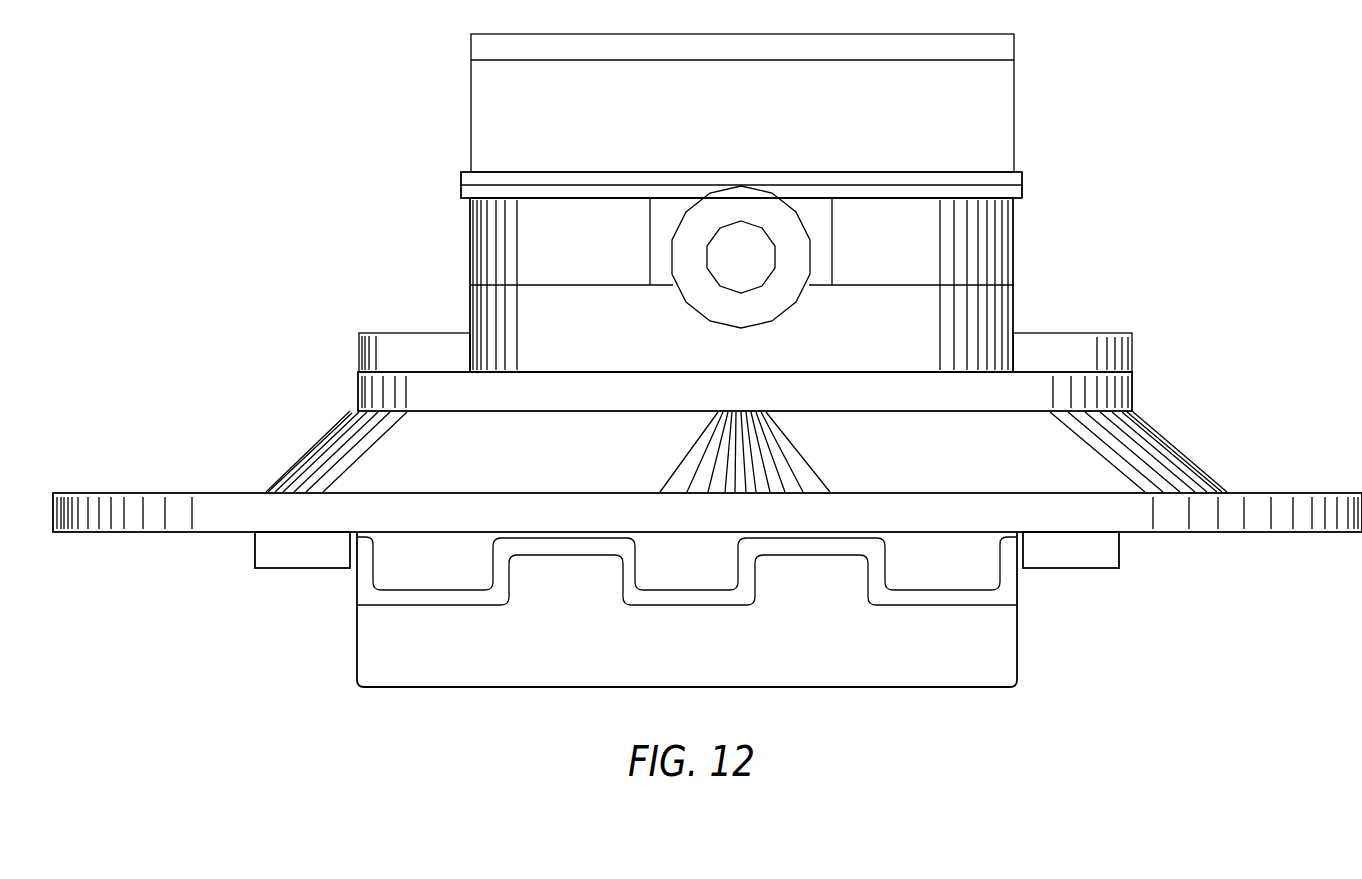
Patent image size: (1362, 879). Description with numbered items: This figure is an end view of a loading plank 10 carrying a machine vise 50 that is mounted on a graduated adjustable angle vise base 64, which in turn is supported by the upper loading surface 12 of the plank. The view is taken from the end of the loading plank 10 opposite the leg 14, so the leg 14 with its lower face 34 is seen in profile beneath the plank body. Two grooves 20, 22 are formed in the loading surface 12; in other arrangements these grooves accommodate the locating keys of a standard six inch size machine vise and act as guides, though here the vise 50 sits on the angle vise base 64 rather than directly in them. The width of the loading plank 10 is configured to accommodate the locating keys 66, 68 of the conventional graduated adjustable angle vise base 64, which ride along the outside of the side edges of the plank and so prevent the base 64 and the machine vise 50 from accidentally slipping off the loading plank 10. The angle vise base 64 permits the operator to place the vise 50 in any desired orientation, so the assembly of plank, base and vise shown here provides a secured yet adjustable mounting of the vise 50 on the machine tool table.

The loading plank 10 is at (1018, 592).
The loading surface 12 is at (544, 538).
The leg 14 is at (1018, 660).
The groove 20 is at (429, 578).
The groove 22 is at (927, 578).
The lower face 34 is at (702, 659).
The machine vise 50 is at (470, 297).
The graduated adjustable angle vise base 64 is at (312, 449).
The locating key 66 is at (280, 569).
The locating key 68 is at (1107, 569).